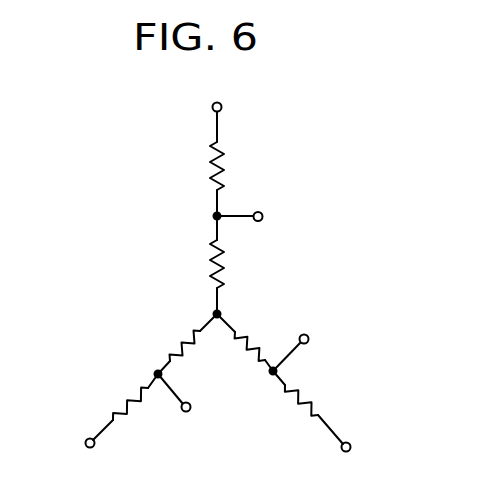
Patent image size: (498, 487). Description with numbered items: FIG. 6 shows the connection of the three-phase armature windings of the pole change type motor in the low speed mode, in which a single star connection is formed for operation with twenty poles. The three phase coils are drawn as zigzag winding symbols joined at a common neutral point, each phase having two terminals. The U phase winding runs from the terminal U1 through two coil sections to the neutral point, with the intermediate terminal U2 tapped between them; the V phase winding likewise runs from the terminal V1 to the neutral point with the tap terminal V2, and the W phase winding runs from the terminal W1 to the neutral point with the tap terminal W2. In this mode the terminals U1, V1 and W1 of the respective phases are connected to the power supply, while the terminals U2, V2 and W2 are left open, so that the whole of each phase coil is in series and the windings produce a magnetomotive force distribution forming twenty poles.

The U phase terminal U1 is at (215, 93).
The U phase terminal U2 is at (256, 219).
The V phase terminal V1 is at (346, 463).
The V phase terminal V2 is at (306, 348).
The W phase terminal W1 is at (85, 458).
The W phase terminal W2 is at (193, 400).